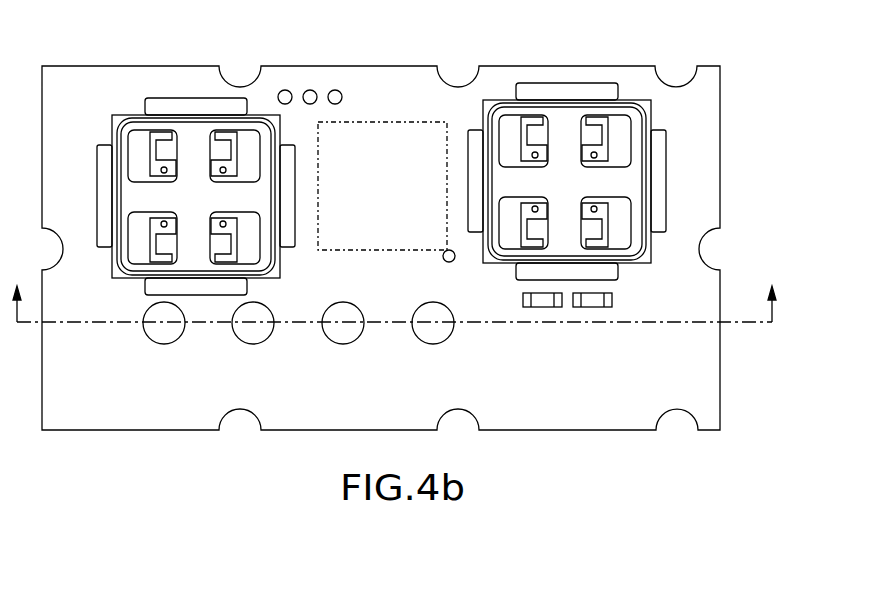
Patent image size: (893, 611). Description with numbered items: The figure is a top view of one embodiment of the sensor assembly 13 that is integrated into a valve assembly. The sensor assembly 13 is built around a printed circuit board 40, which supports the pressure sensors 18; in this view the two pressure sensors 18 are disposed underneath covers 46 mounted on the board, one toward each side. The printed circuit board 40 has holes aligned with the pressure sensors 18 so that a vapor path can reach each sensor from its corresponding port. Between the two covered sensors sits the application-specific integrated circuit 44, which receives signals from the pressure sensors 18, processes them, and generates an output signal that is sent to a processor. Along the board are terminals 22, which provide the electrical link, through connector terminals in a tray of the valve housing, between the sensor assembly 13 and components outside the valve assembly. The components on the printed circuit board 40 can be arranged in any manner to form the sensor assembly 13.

The sensor assembly 13 is at (721, 453).
The pressure sensor 18 is at (163, 168).
The terminals 22 is at (427, 330).
The printed circuit board 40 is at (700, 138).
The application-specific integrated circuit 44 is at (386, 130).
The covers 46 is at (131, 127).